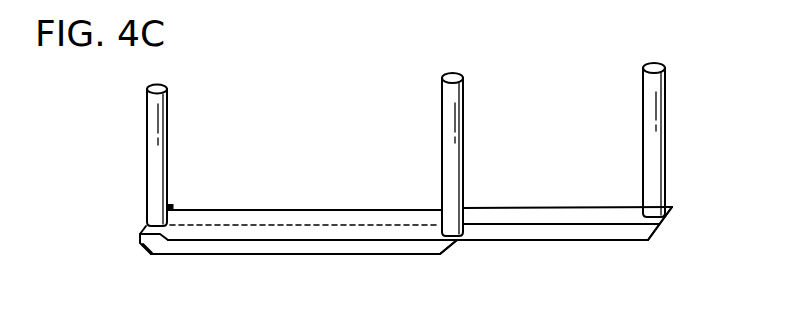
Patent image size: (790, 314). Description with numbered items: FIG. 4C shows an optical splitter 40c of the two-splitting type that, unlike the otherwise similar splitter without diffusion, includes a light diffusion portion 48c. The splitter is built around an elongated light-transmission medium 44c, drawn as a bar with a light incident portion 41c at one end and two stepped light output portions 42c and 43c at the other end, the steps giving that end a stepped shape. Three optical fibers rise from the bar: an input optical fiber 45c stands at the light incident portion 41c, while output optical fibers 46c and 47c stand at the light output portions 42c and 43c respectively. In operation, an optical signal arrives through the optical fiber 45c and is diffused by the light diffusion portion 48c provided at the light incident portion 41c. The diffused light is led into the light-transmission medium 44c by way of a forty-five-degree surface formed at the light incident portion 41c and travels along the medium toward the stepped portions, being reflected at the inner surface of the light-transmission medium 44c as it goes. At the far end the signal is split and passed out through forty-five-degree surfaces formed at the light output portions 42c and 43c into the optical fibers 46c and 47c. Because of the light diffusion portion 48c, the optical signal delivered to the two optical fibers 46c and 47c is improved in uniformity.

The optical splitter 40c is at (331, 84).
The light incident portion 41c is at (160, 250).
The light output portion 42c is at (455, 241).
The light output portion 43c is at (657, 232).
The light-transmission medium 44c is at (310, 208).
The optical fiber 45c is at (182, 183).
The optical fiber 46c is at (477, 180).
The optical fiber 47c is at (677, 184).
The light diffusion portion 48c is at (174, 206).